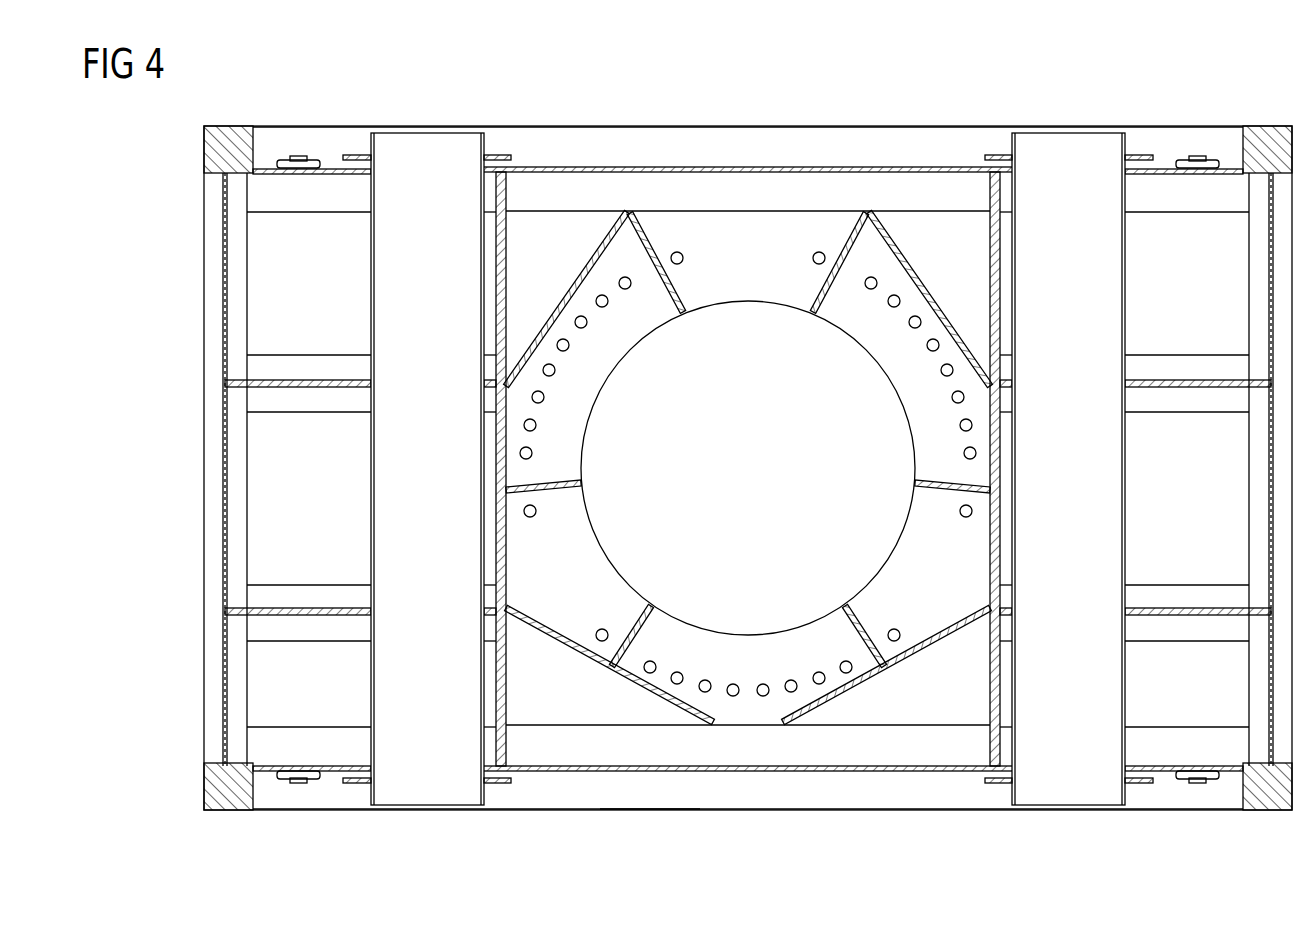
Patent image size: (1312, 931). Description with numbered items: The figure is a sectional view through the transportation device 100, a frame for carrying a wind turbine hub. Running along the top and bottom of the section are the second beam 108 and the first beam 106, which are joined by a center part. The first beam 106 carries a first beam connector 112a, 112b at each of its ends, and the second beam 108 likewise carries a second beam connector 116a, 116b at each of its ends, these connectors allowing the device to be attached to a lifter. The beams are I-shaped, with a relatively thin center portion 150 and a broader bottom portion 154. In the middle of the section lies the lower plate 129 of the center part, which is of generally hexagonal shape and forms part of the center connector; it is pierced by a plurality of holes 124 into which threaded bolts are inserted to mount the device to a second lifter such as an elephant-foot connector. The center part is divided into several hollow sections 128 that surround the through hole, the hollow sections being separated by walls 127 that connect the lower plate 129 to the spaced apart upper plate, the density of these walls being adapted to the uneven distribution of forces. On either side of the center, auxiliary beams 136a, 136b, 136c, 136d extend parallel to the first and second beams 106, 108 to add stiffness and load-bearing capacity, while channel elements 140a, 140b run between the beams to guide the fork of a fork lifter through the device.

The transportation device 100 is at (520, 101).
The first beam 106 is at (885, 810).
The second beam 108 is at (888, 137).
The first beam connector 112a is at (1266, 806).
The first beam connector 112b is at (232, 806).
The second beam connector 116a is at (1276, 134).
The second beam connector 116b is at (225, 134).
The holes 124 is at (819, 250).
The walls 127 is at (684, 312).
The hollow section 128 is at (765, 253).
The lower plate 129 is at (703, 218).
The auxiliary beam 136a is at (1197, 355).
The auxiliary beam 136b is at (1203, 639).
The auxiliary beam 136c is at (301, 355).
The auxiliary beam 136d is at (296, 639).
The channel element 140a is at (372, 468).
The channel element 140b is at (1124, 468).
The center portion 150 is at (566, 772).
The bottom portion 154 is at (543, 728).